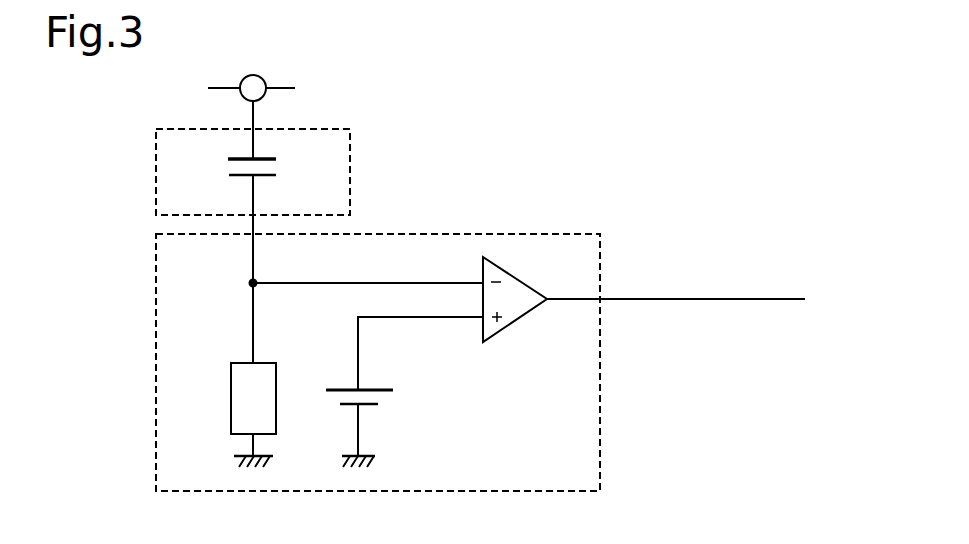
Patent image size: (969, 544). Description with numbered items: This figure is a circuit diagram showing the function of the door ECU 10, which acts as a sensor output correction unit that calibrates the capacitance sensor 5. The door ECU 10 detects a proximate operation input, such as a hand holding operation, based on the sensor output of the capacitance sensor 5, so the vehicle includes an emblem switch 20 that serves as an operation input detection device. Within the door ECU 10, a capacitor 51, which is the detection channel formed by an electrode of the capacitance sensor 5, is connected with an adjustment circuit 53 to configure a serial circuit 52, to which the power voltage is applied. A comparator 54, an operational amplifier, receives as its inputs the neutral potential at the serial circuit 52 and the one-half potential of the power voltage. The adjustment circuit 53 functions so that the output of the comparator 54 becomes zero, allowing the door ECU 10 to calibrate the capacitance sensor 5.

The capacitance sensor 5 is at (310, 123).
The door ECU 10 is at (558, 233).
The emblem switch 20 is at (720, 142).
The capacitor 51 is at (240, 160).
The serial circuit 52 is at (225, 115).
The adjustment circuit 53 is at (231, 400).
The comparator 54 is at (482, 343).